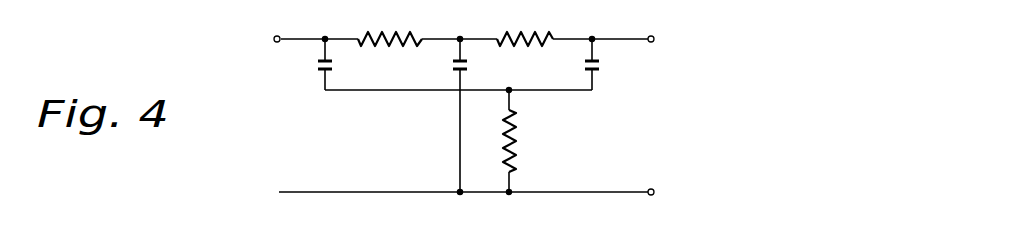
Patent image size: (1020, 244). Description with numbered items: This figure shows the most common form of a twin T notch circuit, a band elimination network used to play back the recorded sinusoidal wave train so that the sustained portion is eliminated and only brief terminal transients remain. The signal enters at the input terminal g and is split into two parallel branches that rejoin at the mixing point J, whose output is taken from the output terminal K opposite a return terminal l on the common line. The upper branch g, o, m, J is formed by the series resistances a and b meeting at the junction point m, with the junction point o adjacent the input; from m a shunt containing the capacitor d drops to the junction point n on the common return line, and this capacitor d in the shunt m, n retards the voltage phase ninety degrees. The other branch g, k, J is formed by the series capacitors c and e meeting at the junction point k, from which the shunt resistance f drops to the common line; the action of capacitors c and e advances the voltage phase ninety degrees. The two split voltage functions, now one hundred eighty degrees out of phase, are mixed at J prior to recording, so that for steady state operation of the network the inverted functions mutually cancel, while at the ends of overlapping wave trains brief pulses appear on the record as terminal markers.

The input terminal g is at (273, 39).
The junction point o is at (325, 36).
The resistance a is at (394, 33).
The junction point m is at (460, 36).
The resistance b is at (517, 34).
The junction point (mixing point j) J is at (591, 38).
The output terminal K is at (653, 36).
The capacitor c is at (334, 65).
The capacitor d is at (469, 65).
The capacitor e is at (601, 64).
The junction point k is at (515, 80).
The resistance f is at (515, 143).
The junction point n is at (458, 198).
The return terminal l is at (653, 189).